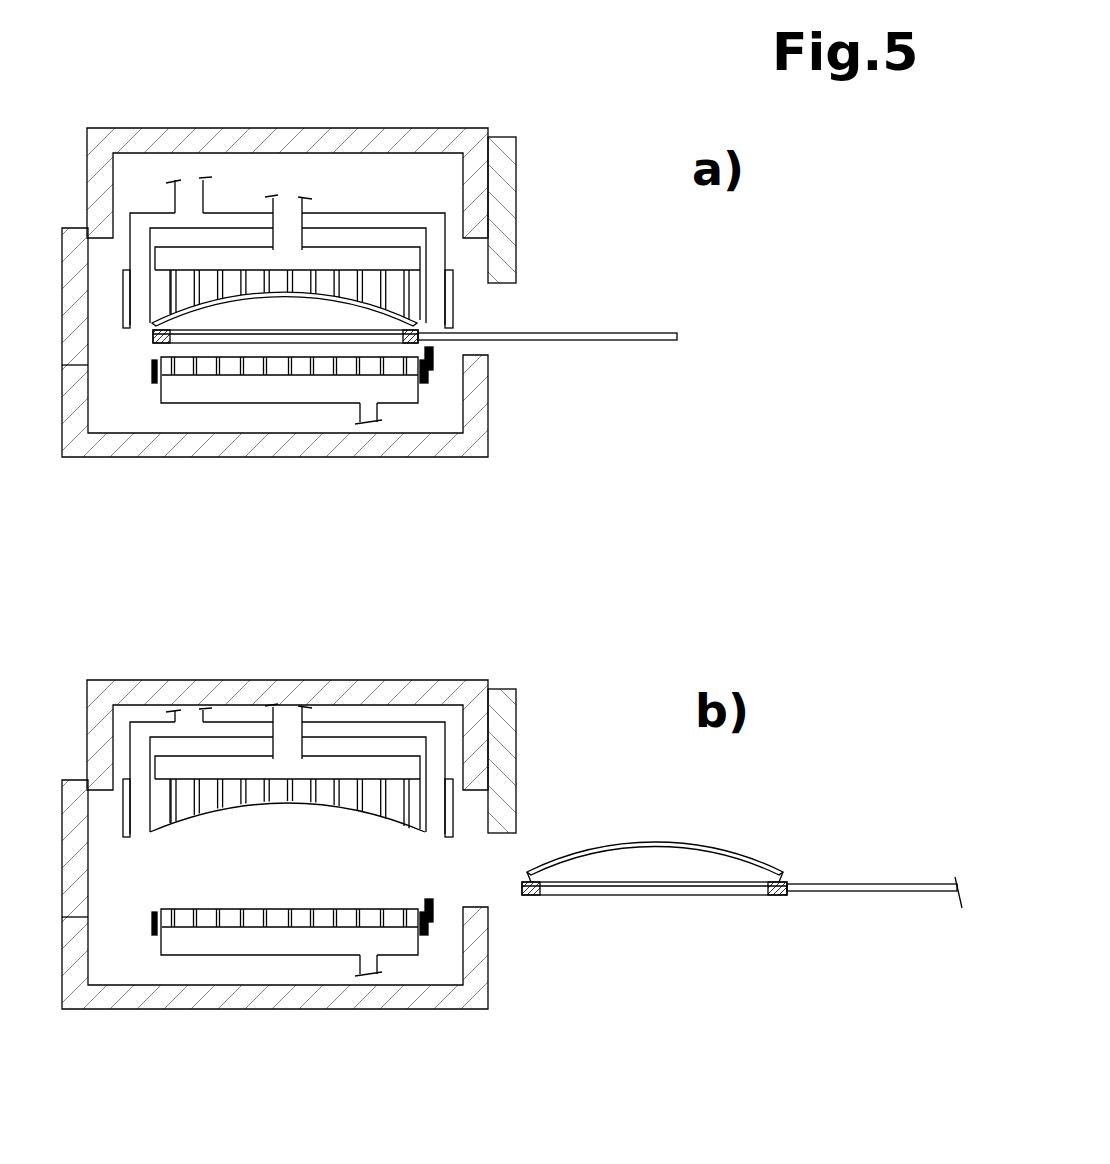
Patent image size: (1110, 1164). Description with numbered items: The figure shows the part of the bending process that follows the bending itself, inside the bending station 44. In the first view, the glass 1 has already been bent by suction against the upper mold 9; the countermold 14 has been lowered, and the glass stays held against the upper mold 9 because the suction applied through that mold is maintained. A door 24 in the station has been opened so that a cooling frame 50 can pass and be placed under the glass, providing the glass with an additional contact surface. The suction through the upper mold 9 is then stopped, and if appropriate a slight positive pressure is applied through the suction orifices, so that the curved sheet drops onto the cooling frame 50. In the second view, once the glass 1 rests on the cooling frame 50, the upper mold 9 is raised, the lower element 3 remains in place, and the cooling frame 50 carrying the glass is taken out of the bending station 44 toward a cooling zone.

The glass 1 is at (318, 296).
The light source circuit board 3 is at (322, 912).
The upper mold 9 is at (229, 277).
The countermold 14 is at (152, 370).
The door 24 is at (504, 216).
The bending station 44 is at (480, 104).
The cooling frame 50 is at (160, 323).